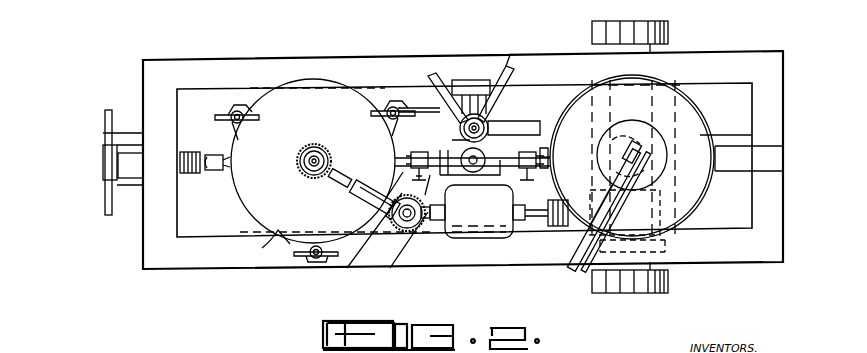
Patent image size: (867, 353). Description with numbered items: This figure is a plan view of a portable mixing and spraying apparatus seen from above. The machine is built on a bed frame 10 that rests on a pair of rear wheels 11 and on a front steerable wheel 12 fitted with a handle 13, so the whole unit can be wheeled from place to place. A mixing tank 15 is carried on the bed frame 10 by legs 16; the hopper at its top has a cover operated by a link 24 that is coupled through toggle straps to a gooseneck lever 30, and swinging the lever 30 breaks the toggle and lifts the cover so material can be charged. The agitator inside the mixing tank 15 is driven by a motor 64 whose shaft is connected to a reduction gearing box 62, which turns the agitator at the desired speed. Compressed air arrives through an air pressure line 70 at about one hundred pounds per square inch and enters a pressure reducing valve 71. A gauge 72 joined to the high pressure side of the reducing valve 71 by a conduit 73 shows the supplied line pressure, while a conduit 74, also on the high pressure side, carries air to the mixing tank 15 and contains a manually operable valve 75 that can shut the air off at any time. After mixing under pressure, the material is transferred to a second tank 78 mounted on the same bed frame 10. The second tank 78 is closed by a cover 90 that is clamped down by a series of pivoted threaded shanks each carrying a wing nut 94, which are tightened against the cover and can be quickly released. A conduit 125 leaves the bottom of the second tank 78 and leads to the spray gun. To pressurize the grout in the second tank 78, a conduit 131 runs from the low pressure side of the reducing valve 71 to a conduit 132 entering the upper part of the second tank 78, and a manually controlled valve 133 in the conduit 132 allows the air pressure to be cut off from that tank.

The bed frame 10 is at (258, 57).
The rear wheels 11 is at (670, 18).
The front steerable wheel 12 is at (133, 184).
The handle 13 is at (106, 126).
The mixing tank 15 is at (692, 102).
The legs 16 is at (732, 145).
The link 24 is at (602, 206).
The gooseneck lever 30 is at (570, 268).
The reduction gearing box 62 is at (698, 212).
The motor 64 is at (494, 211).
The air pressure line 70 is at (510, 72).
The pressure reducing valve 71 is at (471, 92).
The gauge 72 is at (508, 133).
The conduit 73 is at (498, 118).
The conduit 74 is at (411, 220).
The manually operable valve 75 is at (552, 144).
The second tank 78 is at (325, 130).
The cover 90 is at (262, 244).
The wing nut 94 is at (248, 120).
The conduit 125 is at (216, 174).
The conduit 131 is at (420, 120).
The conduit 132 is at (400, 163).
The manually controlled valve 133 is at (419, 155).